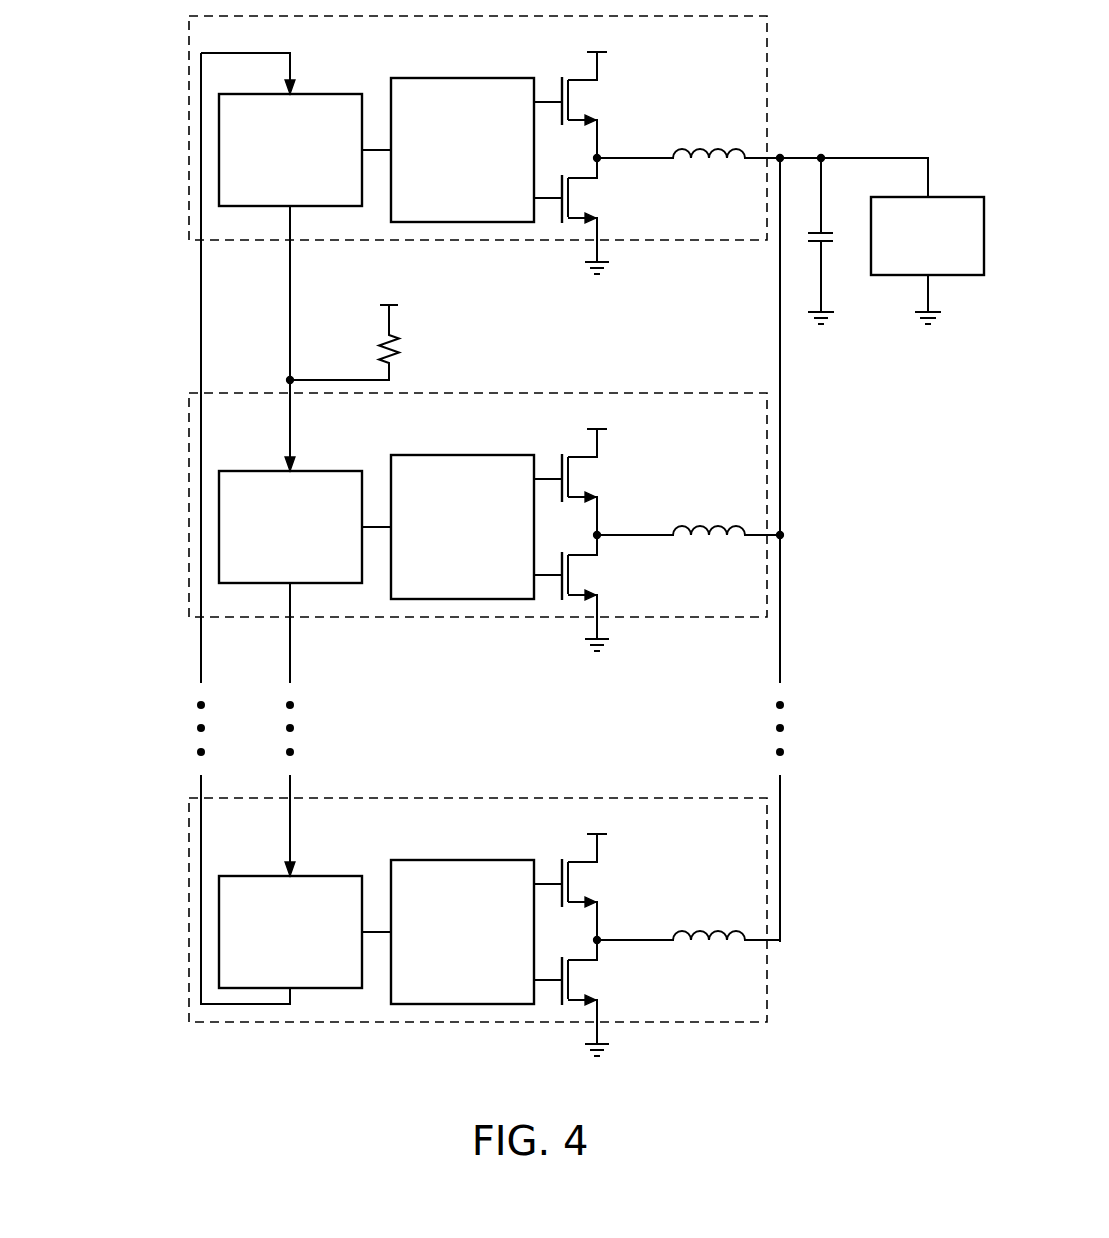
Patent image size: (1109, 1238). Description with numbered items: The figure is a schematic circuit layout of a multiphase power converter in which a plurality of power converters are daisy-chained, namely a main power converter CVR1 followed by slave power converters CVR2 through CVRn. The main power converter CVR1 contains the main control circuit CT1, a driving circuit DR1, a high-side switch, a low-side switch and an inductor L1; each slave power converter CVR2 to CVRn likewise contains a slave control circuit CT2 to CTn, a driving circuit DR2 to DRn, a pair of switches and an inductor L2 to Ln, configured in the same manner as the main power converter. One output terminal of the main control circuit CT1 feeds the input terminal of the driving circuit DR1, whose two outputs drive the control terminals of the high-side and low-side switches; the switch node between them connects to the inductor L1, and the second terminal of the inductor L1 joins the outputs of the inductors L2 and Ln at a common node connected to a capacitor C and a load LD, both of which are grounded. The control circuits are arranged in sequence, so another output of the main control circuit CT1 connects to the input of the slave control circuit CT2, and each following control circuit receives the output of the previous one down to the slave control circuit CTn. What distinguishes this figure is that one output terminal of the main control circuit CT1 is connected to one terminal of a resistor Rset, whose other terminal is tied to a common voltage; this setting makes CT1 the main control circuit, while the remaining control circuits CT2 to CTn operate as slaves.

The main power converter CVR1 is at (189, 46).
The slave power converter CVR2 is at (426, 540).
The slave power converter CVRn is at (424, 945).
The main control circuit CT1 is at (333, 93).
The slave control circuit CT2 is at (290, 494).
The slave control circuit CTn is at (290, 899).
The driving circuit DR1 is at (490, 77).
The driving circuit DR2 is at (462, 504).
The driving circuit DRn is at (462, 909).
The inductor L1 is at (688, 136).
The inductor L2 is at (688, 513).
The inductor Ln is at (688, 918).
The capacitor C is at (832, 241).
The load LD is at (958, 197).
The resistor Rset is at (377, 325).